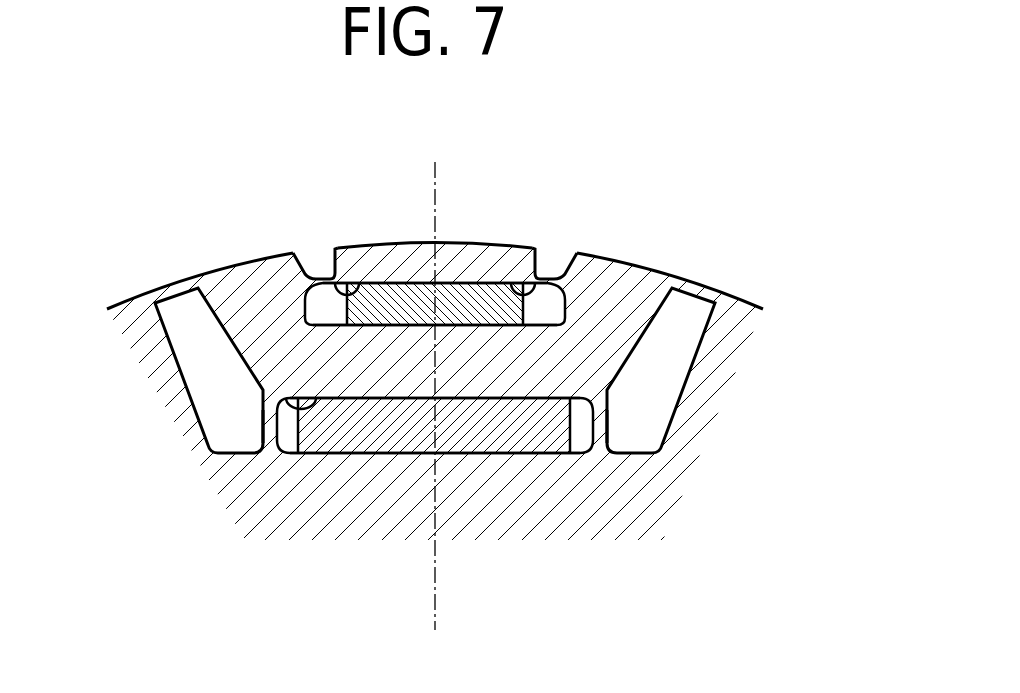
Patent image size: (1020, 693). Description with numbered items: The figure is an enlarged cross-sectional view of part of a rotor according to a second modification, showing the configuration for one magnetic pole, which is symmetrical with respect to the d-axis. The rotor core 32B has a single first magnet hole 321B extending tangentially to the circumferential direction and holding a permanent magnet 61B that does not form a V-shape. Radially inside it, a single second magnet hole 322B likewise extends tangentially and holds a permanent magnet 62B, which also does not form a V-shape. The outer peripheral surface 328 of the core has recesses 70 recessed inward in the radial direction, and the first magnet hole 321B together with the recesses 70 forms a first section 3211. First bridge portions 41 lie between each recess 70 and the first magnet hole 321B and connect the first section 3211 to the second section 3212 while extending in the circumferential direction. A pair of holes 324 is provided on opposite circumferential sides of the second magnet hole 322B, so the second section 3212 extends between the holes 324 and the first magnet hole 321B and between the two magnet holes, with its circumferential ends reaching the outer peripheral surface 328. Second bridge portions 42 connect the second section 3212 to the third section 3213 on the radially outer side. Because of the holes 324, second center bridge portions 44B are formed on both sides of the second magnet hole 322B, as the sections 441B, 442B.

The rotor core 32B is at (496, 214).
The outer peripheral surface 328 is at (642, 267).
The recess 70 is at (313, 240).
The second bridge portion 42 is at (177, 288).
The hole 324 is at (237, 377).
The first magnet hole 321B is at (367, 282).
The first bridge portion 41 is at (320, 293).
The permanent magnet 61B is at (395, 303).
The second magnet hole 322B is at (305, 399).
The permanent magnet 62B is at (497, 410).
The first section 3211 is at (500, 272).
The second section 3212 is at (500, 369).
The third section 3213 is at (502, 529).
The second center bridge portion 44B is at (362, 596).
The section of second center bridge portion 441B is at (265, 418).
The section of second center bridge portion 442B is at (602, 418).
The element d-axis is at (437, 583).